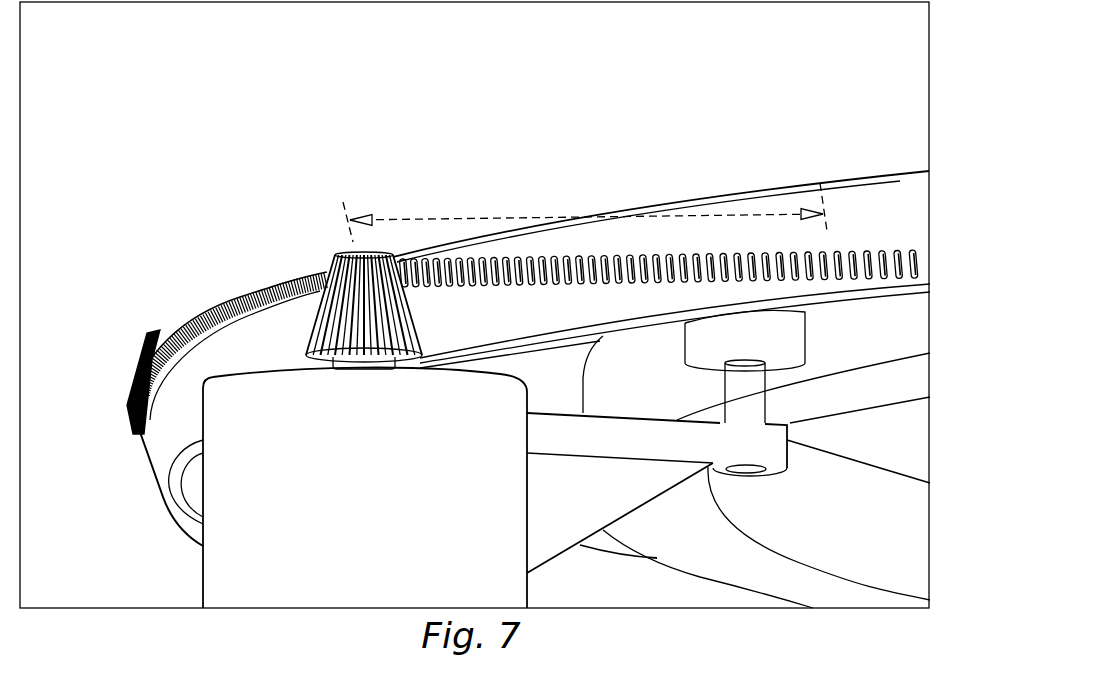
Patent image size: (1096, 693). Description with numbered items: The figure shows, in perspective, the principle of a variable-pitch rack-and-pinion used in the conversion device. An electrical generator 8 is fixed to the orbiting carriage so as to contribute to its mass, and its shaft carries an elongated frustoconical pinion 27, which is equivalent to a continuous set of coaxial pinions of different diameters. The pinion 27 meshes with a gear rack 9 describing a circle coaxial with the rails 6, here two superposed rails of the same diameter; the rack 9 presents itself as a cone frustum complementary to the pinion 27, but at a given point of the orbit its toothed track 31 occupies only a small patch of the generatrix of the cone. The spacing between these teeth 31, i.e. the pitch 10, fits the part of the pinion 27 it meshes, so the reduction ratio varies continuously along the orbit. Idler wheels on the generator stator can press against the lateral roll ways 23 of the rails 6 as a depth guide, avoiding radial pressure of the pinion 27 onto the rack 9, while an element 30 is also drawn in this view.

The rail 6 is at (716, 542).
The electrical generator 8 is at (292, 512).
The gear rack 9 is at (862, 172).
The pitch 10 is at (478, 214).
The lateral roll way 23 is at (840, 320).
The pinion 27 is at (330, 248).
The retaining clip 30 is at (767, 334).
The toothed track 31 is at (172, 328).